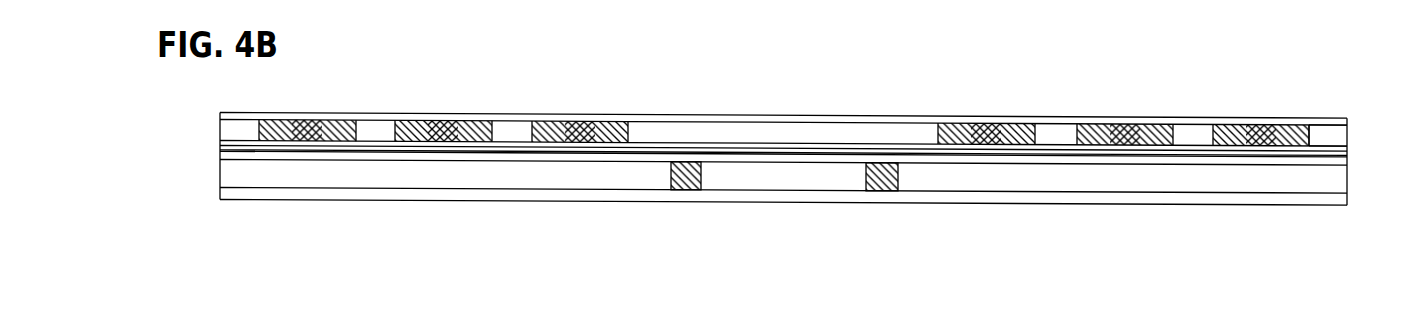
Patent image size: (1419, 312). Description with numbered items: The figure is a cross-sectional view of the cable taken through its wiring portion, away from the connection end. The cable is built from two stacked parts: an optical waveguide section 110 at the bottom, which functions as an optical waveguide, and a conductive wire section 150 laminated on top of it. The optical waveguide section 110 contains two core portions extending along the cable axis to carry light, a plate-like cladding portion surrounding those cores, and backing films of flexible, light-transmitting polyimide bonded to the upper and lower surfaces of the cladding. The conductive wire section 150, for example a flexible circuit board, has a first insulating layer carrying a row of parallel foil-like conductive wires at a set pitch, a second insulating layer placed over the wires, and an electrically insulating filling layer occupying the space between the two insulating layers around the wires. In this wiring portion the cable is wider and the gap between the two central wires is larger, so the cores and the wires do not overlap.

The optical waveguide section 110 is at (807, 208).
The conductive wire section 150 is at (807, 135).